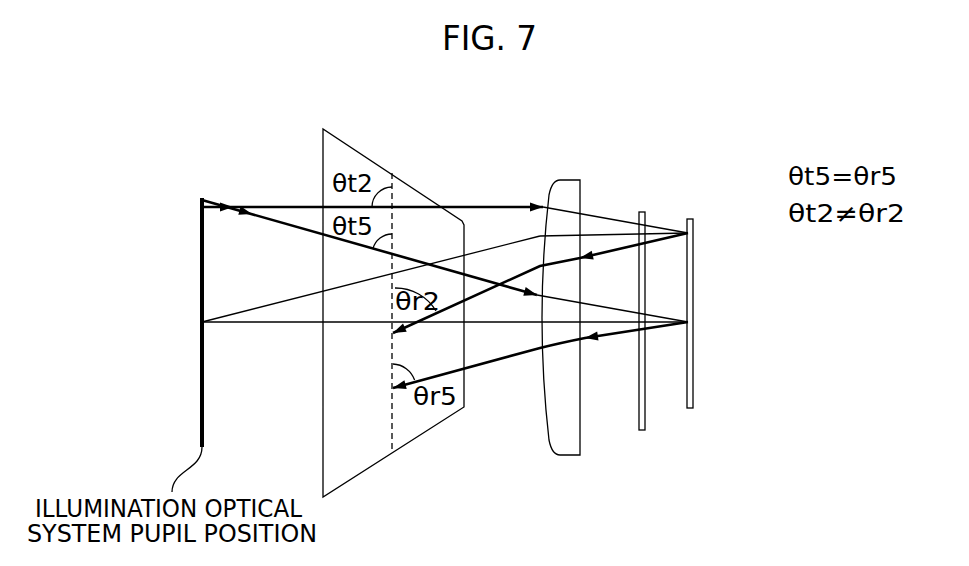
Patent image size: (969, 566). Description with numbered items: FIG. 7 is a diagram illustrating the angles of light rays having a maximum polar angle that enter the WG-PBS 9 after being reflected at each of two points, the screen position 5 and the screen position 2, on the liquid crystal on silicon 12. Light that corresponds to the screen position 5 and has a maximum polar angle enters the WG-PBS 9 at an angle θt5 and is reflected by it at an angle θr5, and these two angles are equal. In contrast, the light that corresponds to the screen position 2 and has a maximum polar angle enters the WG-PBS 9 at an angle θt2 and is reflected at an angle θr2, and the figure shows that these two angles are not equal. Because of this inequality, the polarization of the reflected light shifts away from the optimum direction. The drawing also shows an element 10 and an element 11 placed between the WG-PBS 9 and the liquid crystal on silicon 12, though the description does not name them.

The screen position 2 is at (639, 231).
The screen position 5 is at (470, 321).
The WG-PBS 9 is at (367, 467).
The lens 10 is at (570, 455).
The polarizing plate 11 is at (645, 430).
The liquid crystal on silicon 12 is at (693, 408).